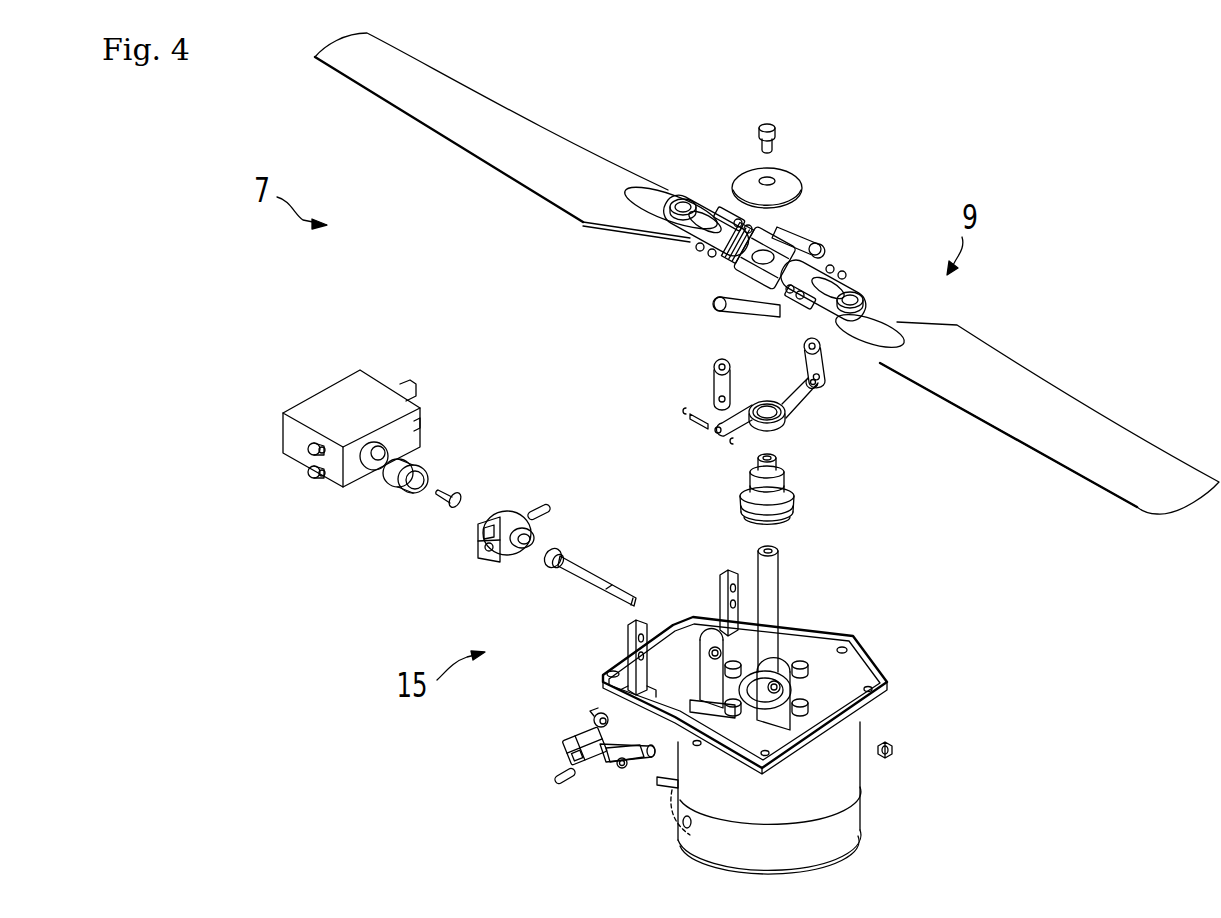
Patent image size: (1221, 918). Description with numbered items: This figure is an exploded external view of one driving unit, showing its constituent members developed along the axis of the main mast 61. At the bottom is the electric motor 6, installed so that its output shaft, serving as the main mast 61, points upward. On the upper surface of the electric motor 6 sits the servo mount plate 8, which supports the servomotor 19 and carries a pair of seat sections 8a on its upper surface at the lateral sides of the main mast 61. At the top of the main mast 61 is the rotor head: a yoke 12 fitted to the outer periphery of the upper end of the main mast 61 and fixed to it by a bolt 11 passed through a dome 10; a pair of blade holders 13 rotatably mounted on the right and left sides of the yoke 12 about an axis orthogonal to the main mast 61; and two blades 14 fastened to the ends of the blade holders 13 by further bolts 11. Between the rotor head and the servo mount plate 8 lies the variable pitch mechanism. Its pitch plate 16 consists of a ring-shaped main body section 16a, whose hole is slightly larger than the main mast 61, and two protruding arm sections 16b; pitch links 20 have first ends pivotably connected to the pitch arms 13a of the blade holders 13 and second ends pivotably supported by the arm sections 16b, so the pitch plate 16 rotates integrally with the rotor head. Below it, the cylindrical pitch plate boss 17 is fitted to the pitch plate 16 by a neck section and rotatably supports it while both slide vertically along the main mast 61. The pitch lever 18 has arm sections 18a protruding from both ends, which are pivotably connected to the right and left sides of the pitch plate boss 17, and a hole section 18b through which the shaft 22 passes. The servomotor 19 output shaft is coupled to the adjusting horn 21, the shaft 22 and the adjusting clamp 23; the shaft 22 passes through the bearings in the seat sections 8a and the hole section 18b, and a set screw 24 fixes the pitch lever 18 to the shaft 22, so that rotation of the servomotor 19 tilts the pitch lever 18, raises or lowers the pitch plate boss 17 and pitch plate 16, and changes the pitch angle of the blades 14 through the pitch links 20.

The electric motor 6 is at (857, 810).
The servo mount plate 8 is at (866, 648).
The seat section 8a is at (710, 700).
The dome 10 is at (790, 175).
The bolt 11 is at (772, 127).
The yoke 12 is at (750, 280).
The blade holder 13 is at (700, 200).
The pitch arm 13a is at (807, 220).
The blade 14 is at (490, 103).
The pitch plate 16 is at (787, 413).
The main body section 16a is at (767, 400).
The arm section 16b is at (717, 440).
The pitch plate boss 17 is at (788, 483).
The pitch lever 18 is at (568, 740).
The arm section 18a is at (600, 706).
The hole section 18b is at (613, 780).
The servomotor 19 is at (336, 393).
The pitch link 20 is at (710, 382).
The adjusting horn 21 is at (422, 465).
The shaft 22 is at (580, 563).
The adjusting clamp 23 is at (507, 507).
The set screw 24 is at (547, 503).
The main mast 61 is at (780, 590).